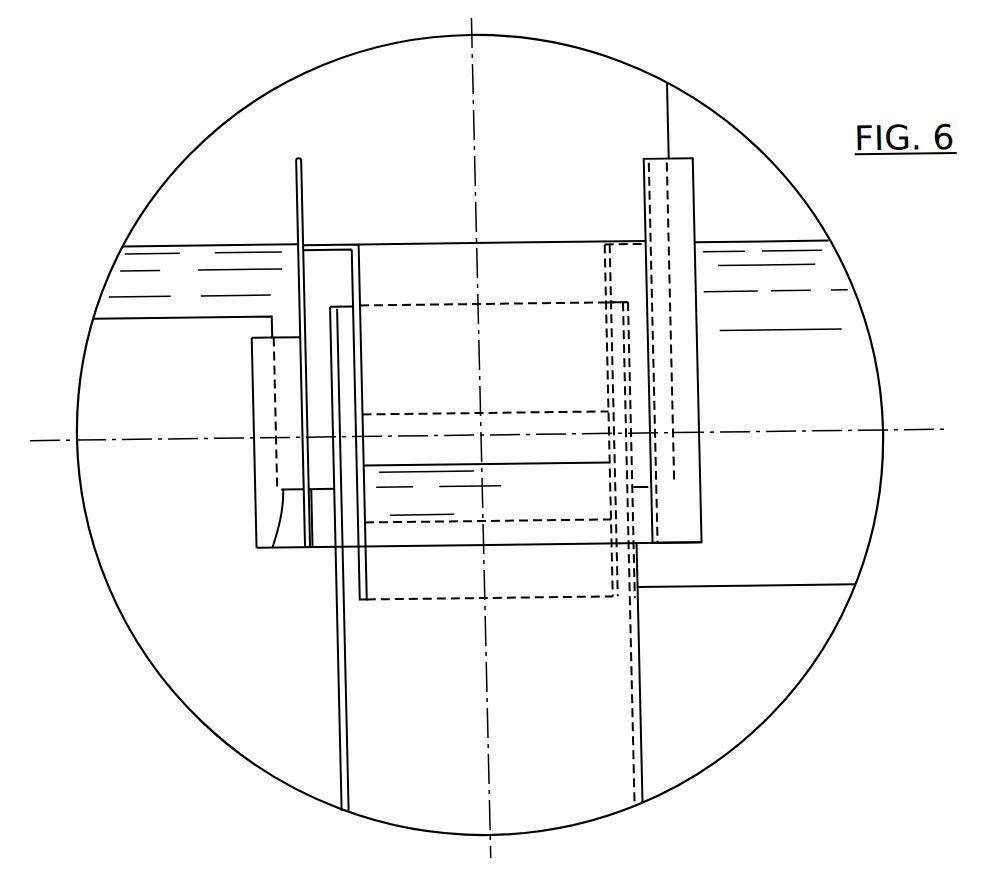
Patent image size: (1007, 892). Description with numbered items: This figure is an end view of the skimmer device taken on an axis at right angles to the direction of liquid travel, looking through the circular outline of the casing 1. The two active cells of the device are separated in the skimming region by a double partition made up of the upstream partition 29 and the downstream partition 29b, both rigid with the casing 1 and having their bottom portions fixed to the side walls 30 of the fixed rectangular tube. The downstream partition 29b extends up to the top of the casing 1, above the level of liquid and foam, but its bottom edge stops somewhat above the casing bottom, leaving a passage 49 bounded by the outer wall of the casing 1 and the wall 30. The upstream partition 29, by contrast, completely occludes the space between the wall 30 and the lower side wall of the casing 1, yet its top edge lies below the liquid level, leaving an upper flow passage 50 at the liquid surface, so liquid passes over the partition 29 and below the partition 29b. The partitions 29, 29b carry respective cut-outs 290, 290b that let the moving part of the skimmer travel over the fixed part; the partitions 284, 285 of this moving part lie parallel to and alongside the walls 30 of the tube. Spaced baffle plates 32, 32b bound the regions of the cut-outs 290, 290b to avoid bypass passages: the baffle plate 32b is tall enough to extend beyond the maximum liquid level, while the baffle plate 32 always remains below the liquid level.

The casing 1 is at (880, 520).
The partition 29 is at (186, 368).
The downstream partition 29b is at (800, 369).
The wall 30 is at (332, 676).
The baffle plate 32 is at (255, 485).
The baffle plate 32b is at (685, 210).
The passage 49 is at (770, 675).
The upper flow passage 50 is at (160, 262).
The partition 284 is at (365, 360).
The partition 285 is at (609, 380).
The cut-out 290 is at (270, 544).
The cut-out 290b is at (658, 490).